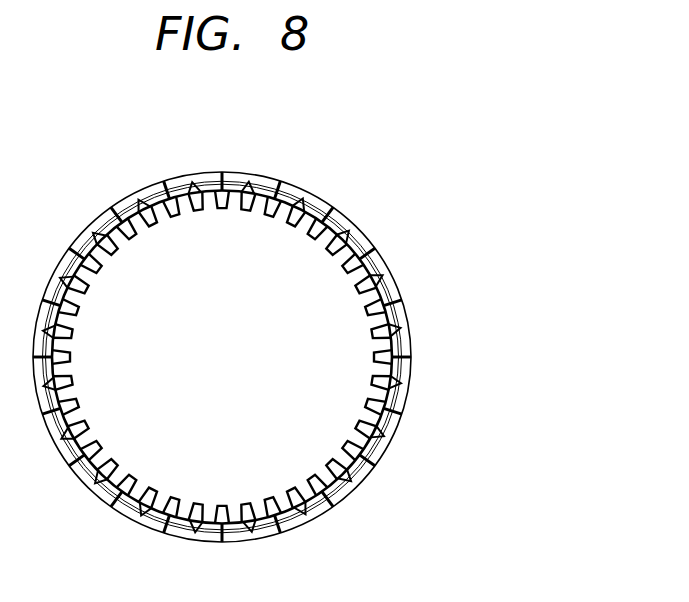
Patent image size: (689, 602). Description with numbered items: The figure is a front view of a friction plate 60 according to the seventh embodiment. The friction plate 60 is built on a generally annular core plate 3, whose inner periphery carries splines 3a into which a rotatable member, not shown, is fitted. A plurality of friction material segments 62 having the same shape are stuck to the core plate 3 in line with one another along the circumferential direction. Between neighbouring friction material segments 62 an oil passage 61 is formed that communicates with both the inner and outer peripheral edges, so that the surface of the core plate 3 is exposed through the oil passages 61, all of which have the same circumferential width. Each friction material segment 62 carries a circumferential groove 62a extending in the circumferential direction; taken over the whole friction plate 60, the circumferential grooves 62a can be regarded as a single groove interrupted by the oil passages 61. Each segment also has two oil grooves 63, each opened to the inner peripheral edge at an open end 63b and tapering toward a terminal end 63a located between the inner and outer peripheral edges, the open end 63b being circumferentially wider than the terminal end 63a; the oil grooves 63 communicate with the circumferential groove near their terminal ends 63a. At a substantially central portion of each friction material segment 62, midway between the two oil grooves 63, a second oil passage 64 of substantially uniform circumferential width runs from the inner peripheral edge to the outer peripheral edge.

The core plate 3 is at (222, 357).
The splines 3a is at (97, 289).
The friction plate 60 is at (338, 150).
The oil passage 61 is at (164, 182).
The friction material segment 62 is at (240, 316).
The circumferential groove 62a is at (320, 197).
The oil groove 63 is at (118, 205).
The terminal end 63a is at (194, 182).
The open end 63b is at (150, 226).
The second oil passage 64 is at (323, 232).